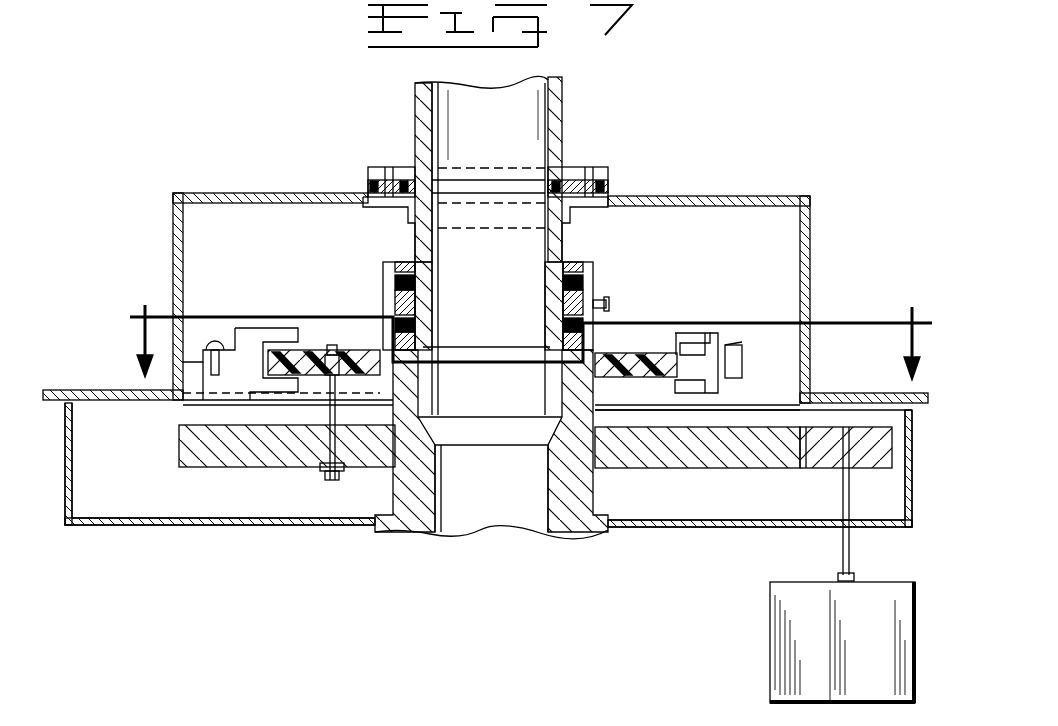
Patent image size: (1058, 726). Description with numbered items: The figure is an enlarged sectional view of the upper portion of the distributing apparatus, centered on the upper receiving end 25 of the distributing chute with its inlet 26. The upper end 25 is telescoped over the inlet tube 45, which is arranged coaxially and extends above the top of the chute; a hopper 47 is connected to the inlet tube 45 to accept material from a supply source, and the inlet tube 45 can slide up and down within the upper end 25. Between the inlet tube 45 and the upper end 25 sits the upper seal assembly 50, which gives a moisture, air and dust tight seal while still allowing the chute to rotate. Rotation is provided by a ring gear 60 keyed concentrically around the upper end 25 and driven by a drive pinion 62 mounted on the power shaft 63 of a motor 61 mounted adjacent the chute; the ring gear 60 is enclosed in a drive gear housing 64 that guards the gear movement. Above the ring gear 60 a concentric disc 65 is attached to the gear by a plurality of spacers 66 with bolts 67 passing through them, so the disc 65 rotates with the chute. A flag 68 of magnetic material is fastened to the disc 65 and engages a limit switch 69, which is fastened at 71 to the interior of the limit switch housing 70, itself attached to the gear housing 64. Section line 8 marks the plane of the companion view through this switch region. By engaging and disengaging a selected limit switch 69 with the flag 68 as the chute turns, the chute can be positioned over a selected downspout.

The section line 8- 8 is at (526, 331).
The upper receiving end 25 is at (563, 518).
The inlet 26 is at (468, 500).
The inlet tube 45 is at (610, 330).
The hopper 47 is at (563, 125).
The upper seal assembly 50 is at (648, 277).
The ring gear 60 is at (215, 458).
The motor 61 is at (795, 640).
The drive pinion 62 is at (826, 460).
The power shaft 63 is at (843, 553).
The drive gear housing 64 is at (100, 523).
The concentric disc 65 is at (308, 350).
The spacers 66 is at (345, 432).
The bolts 67 is at (336, 345).
The flag 68 is at (258, 333).
The limit switch 69 is at (265, 330).
The limit switch housing 70 is at (312, 192).
The fastening point 71 is at (190, 375).